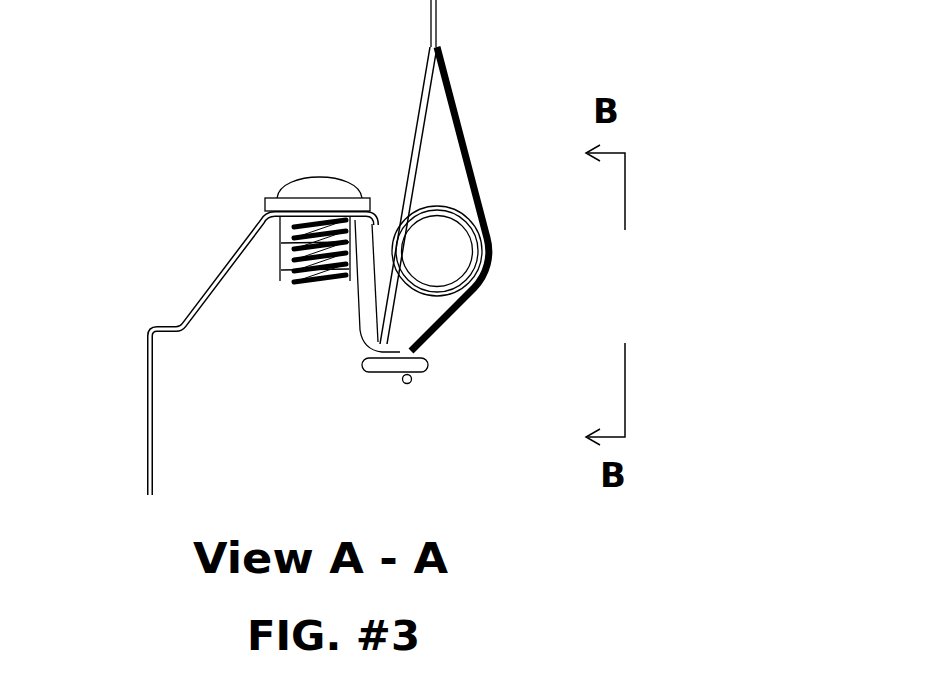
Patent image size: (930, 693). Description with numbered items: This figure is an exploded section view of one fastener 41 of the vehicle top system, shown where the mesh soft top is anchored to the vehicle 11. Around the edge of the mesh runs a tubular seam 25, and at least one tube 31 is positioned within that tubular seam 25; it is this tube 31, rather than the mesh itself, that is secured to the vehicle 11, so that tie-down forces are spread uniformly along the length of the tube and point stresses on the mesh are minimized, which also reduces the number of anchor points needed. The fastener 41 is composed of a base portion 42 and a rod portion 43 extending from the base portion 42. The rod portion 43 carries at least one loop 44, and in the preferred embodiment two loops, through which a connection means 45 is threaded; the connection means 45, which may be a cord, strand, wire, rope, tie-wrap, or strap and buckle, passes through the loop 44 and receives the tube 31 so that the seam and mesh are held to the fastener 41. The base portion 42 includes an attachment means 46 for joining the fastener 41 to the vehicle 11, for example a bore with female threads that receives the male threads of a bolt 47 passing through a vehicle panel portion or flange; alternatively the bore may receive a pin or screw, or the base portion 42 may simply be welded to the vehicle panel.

The vehicle 11 is at (147, 413).
The tubular seam 25 is at (417, 93).
The tube 31 is at (425, 219).
The fastener 41 is at (355, 302).
The base portion 42 is at (283, 248).
The rod portion 43 is at (357, 328).
The loop 44 is at (370, 368).
The connection means 45 is at (405, 385).
The attachment means 46 is at (292, 262).
The bolt 47 is at (305, 178).